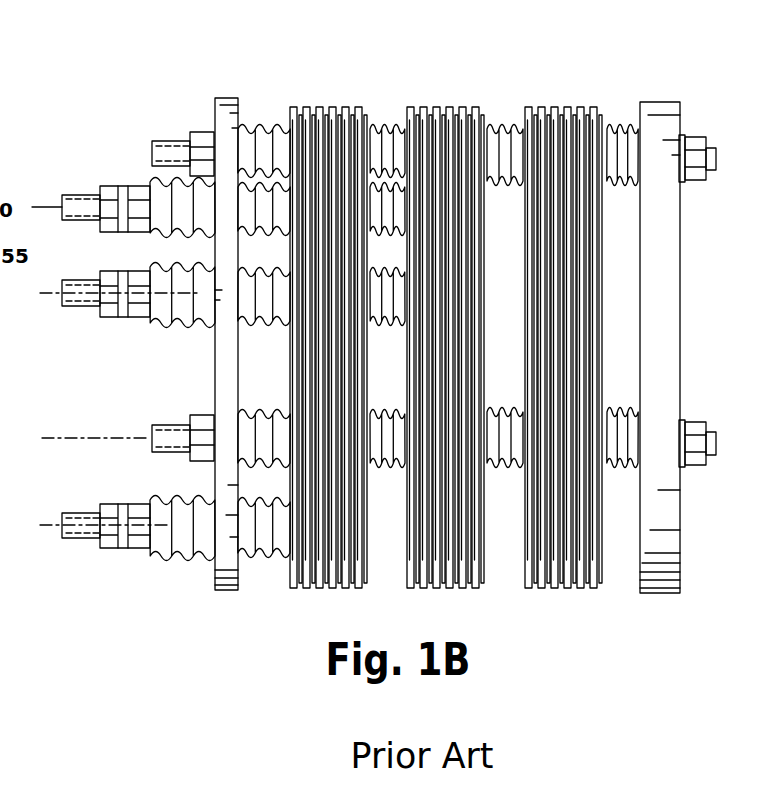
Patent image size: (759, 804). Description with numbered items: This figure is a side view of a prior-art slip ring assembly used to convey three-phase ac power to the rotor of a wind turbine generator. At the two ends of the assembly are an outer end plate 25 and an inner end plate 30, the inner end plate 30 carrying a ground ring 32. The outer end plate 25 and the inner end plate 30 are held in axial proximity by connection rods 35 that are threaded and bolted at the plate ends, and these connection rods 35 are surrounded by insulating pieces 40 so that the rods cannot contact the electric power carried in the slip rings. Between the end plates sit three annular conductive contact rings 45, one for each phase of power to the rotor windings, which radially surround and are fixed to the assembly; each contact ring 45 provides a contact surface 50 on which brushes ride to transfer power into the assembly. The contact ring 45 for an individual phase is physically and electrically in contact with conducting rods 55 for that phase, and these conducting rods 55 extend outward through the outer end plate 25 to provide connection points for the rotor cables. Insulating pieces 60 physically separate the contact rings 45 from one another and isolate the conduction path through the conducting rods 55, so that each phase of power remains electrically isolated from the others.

The outer end plate 25 is at (216, 98).
The inner end plate 30 is at (660, 570).
The ground ring 32 is at (668, 102).
The connection rods 35 is at (152, 152).
The insulating pieces 40 is at (262, 125).
The annular conductive contact rings 45 is at (330, 107).
The contact surface 50 is at (330, 580).
The conducting rods 55 is at (62, 197).
The insulating pieces 60 is at (170, 238).